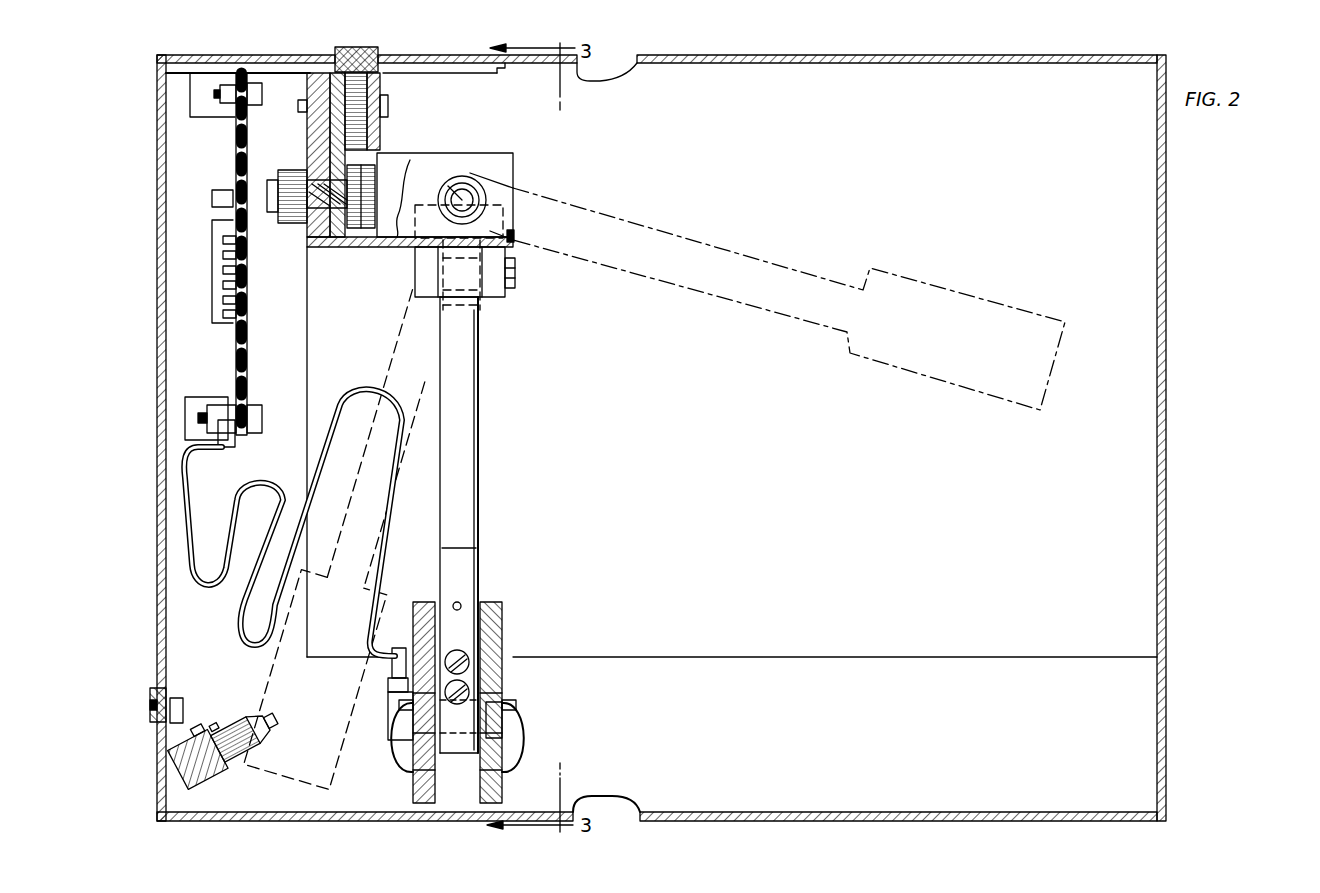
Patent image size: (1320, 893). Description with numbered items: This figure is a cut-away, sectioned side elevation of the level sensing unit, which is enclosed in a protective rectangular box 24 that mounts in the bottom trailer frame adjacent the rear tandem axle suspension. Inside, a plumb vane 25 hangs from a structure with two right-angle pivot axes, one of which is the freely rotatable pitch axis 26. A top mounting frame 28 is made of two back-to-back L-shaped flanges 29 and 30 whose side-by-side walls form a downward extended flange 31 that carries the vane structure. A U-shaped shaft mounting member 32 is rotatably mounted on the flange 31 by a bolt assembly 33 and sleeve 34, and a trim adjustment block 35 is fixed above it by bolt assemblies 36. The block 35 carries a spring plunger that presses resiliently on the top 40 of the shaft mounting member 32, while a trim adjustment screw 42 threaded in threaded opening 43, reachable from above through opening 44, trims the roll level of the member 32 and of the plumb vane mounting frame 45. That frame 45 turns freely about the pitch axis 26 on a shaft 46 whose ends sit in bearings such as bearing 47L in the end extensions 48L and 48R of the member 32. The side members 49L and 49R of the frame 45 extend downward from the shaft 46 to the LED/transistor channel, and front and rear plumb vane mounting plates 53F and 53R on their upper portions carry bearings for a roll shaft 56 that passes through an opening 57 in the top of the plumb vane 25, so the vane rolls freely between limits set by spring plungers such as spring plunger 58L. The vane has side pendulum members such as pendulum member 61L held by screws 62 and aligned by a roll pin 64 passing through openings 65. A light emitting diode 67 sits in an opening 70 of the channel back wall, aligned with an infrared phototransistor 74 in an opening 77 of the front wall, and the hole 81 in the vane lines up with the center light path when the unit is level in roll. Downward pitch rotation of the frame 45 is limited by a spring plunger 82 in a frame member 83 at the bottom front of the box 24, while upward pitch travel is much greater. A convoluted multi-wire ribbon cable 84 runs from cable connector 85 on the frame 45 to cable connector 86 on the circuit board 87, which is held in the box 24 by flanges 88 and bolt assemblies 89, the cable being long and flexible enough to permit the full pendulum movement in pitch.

The protective rectangular box 24 is at (1166, 508).
The plumb vane 25 is at (470, 508).
The pitch axis 26 is at (510, 212).
The top mounting frame 28 is at (322, 250).
The L shaped flange 29 is at (492, 80).
The L shaped flange 30 is at (195, 80).
The downward extended flange 31 is at (312, 158).
The U shaped shaft mounting member 32 is at (486, 155).
The bolt assembly 33 is at (282, 186).
The sleeve 34 is at (306, 182).
The trim adjustment block 35 is at (378, 100).
The bolt assemblies 36 is at (389, 116).
The top of shaft mounting member 40 is at (399, 197).
The trim adjustment screw 42 is at (379, 150).
The threaded opening 43 is at (381, 132).
The opening 44 is at (405, 73).
The plumb vane mounting frame 45 is at (490, 474).
The shaft 46 is at (472, 192).
The bearing 47L is at (481, 174).
The end extension 48L is at (510, 230).
The end extension 48R is at (383, 243).
The side member 49L is at (447, 318).
The side member 49R is at (483, 433).
The front plumb vane mounting plate 53F is at (413, 263).
The rear plumb vane mounting plate 53R is at (500, 298).
The roll shaft 56 is at (403, 292).
The opening 57 is at (516, 283).
The spring plunger 58L is at (472, 688).
The pendulum member 61L is at (463, 620).
The screws 62 is at (462, 656).
The roll pin 64 is at (454, 602).
The openings 65 is at (461, 602).
The light emitting diode 67 is at (503, 716).
The opening 70 is at (513, 710).
The infrared phototransistor 74 is at (398, 740).
The opening 77 is at (398, 716).
The hole 81 is at (506, 746).
The spring plunger 82 is at (249, 736).
The frame member 83 is at (215, 706).
The convoluted multi-wire ribbon cable 84 is at (233, 612).
The cable connector 85 is at (392, 694).
The cable connector 86 is at (237, 445).
The circuit board 87 is at (248, 325).
The flanges 88 is at (208, 112).
The bolt assemblies 89 is at (249, 104).